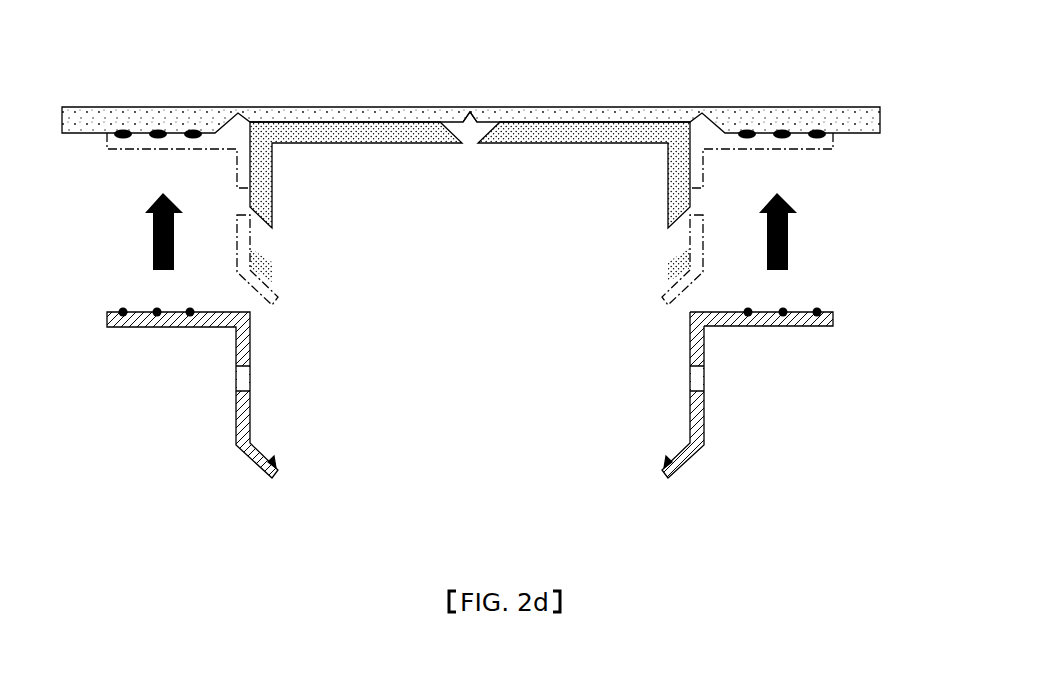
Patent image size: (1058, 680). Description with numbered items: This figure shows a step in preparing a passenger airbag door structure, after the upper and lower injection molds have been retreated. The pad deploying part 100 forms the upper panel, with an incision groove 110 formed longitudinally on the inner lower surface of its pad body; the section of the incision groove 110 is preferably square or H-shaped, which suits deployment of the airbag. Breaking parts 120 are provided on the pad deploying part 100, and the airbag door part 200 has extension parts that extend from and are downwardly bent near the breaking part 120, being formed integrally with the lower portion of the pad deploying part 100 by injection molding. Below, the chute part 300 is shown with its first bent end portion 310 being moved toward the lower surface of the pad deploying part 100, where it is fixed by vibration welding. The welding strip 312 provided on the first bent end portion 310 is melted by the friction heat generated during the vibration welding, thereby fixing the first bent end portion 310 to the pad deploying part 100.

The pad deploying part 100 is at (624, 107).
The incision groove 110 is at (463, 118).
The breaking part 120 is at (697, 117).
The airbag door part 200 is at (240, 380).
The chute part 300 is at (791, 365).
The first bent end portion 310 is at (835, 316).
The welding strip 312 is at (818, 330).